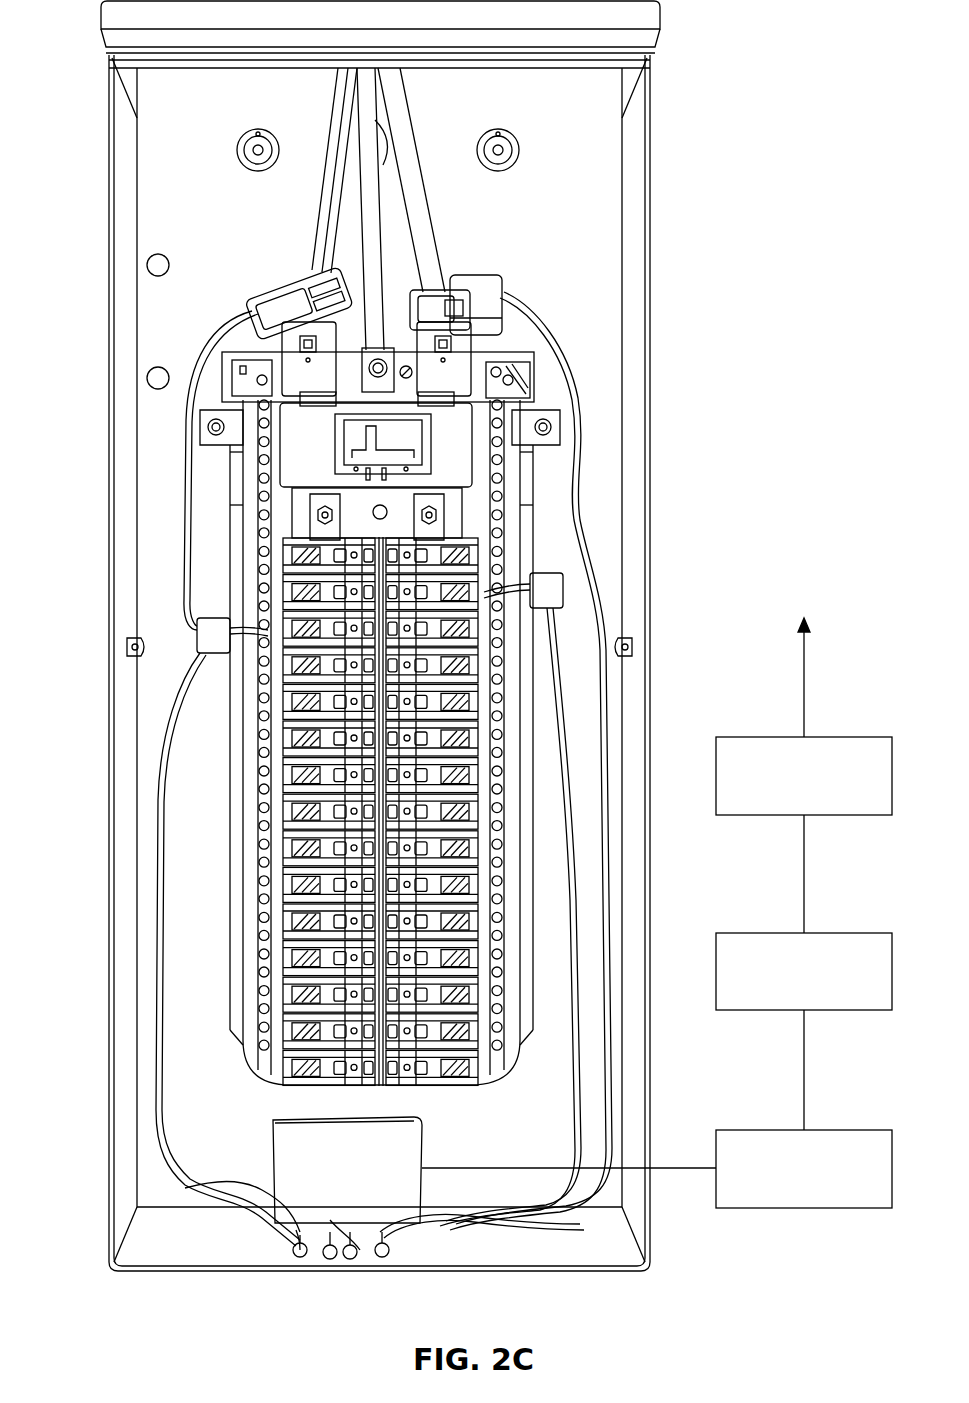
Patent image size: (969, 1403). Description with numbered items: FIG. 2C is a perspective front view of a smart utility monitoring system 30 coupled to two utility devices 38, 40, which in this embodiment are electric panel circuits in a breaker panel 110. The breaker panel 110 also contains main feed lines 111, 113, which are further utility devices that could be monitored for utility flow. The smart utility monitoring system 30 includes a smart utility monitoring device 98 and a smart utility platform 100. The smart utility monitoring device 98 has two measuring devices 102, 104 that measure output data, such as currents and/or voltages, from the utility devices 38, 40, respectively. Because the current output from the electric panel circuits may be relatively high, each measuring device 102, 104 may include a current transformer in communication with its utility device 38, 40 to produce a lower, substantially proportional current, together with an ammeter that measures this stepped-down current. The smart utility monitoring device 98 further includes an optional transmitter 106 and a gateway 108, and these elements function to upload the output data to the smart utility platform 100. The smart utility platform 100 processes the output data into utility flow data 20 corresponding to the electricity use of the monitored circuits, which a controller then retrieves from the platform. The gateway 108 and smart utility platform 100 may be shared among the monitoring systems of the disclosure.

The breaker panel 110 is at (596, 182).
The main feed line 111 is at (320, 217).
The main feed line 113 is at (440, 250).
The utility device 38 is at (263, 607).
The utility device 40 is at (497, 567).
The measuring device 102 is at (262, 670).
The measuring device 104 is at (490, 630).
The smart utility monitoring device 98 is at (441, 1232).
The transmitter 106 is at (822, 1130).
The gateway 108 is at (822, 933).
The smart utility platform 100 is at (822, 737).
The utility flow data 20 is at (803, 650).
The smart utility monitoring system 30 is at (684, 1200).